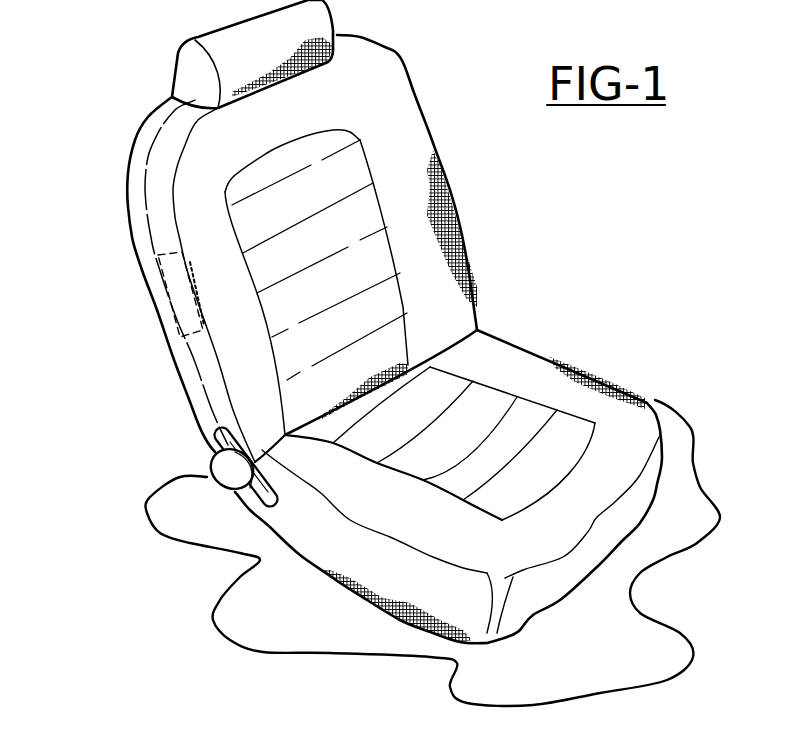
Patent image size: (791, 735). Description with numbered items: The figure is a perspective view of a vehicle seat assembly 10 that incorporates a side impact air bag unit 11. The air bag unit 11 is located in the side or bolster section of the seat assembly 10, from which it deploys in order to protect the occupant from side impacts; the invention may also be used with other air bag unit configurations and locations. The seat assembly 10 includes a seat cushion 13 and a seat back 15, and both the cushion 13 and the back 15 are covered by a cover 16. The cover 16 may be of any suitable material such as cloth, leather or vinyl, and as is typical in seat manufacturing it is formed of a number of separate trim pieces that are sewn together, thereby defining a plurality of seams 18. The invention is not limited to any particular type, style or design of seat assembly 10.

The vehicle seat assembly 10 is at (493, 246).
The side impact air bag unit 11 is at (147, 306).
The seat cushion 13 is at (642, 420).
The seat back 15 is at (402, 92).
The cover 16 is at (128, 232).
The seams 18 is at (153, 148).